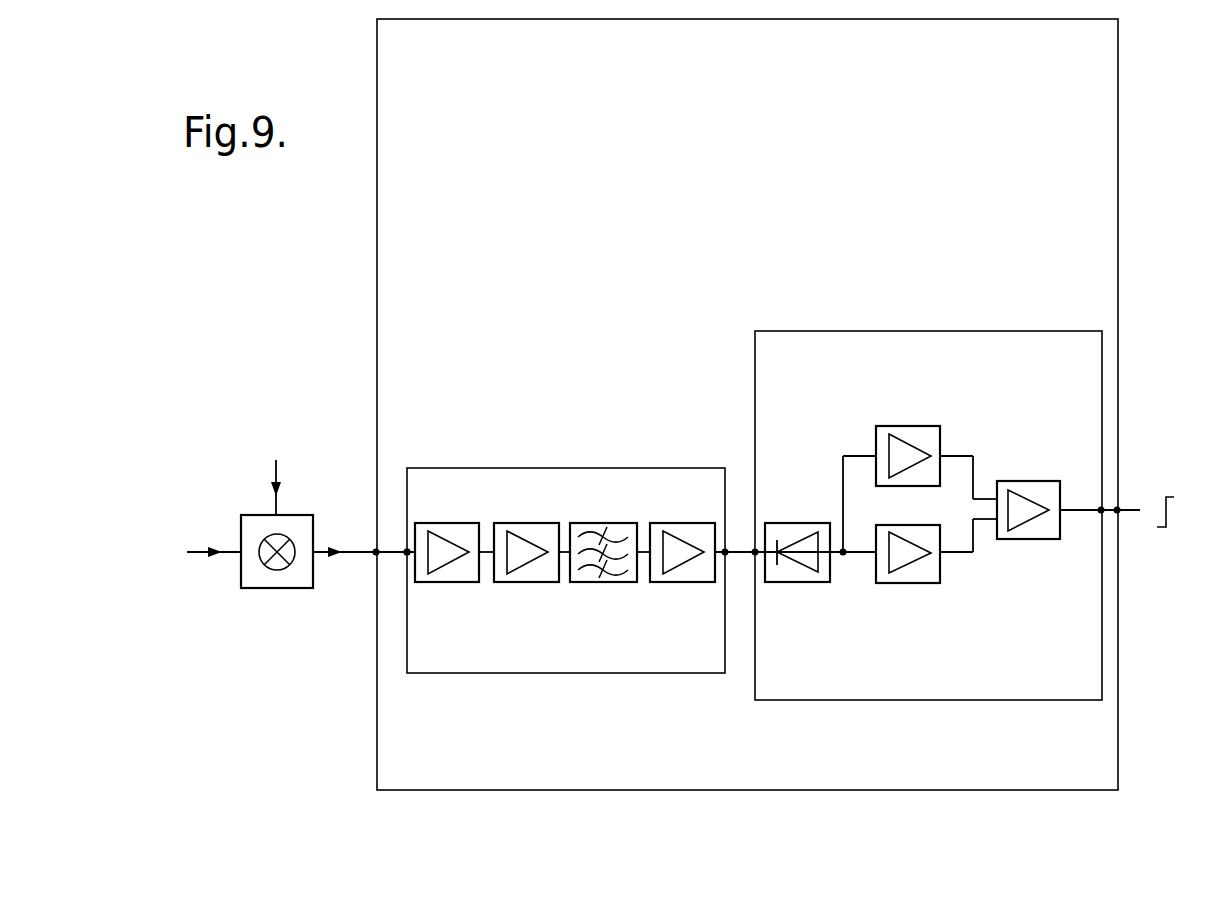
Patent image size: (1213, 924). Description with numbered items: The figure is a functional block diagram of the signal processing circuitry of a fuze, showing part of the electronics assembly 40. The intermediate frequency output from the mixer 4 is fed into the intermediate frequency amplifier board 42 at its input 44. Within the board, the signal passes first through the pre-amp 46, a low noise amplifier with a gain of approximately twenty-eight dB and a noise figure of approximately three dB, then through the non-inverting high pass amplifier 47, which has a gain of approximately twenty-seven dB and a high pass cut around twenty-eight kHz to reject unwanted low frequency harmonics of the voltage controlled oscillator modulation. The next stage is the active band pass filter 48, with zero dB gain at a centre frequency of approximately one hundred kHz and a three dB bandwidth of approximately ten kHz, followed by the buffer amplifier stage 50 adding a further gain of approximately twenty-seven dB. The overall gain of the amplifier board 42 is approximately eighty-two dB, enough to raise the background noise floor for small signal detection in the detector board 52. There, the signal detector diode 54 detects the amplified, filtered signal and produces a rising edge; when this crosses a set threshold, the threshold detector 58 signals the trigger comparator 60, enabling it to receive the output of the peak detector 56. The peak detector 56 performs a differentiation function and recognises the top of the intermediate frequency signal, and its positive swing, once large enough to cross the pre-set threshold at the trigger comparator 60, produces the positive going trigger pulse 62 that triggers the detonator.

The mixer 4 is at (277, 590).
The electronics assembly 40 is at (490, 791).
The intermediate frequency amplifier board 42 is at (544, 674).
The input 44 is at (405, 553).
The pre-amp 46 is at (447, 583).
The non-inverting high pass amplifier 47 is at (526, 583).
The active band pass filter 48 is at (606, 583).
The buffer amplifier stage 50 is at (680, 583).
The detector board 52 is at (903, 330).
The signal detector diode 54 is at (800, 583).
The peak detector 56 is at (906, 425).
The threshold detector 58 is at (912, 585).
The trigger comparator 60 is at (1030, 540).
The trigger pulse 62 is at (1170, 520).